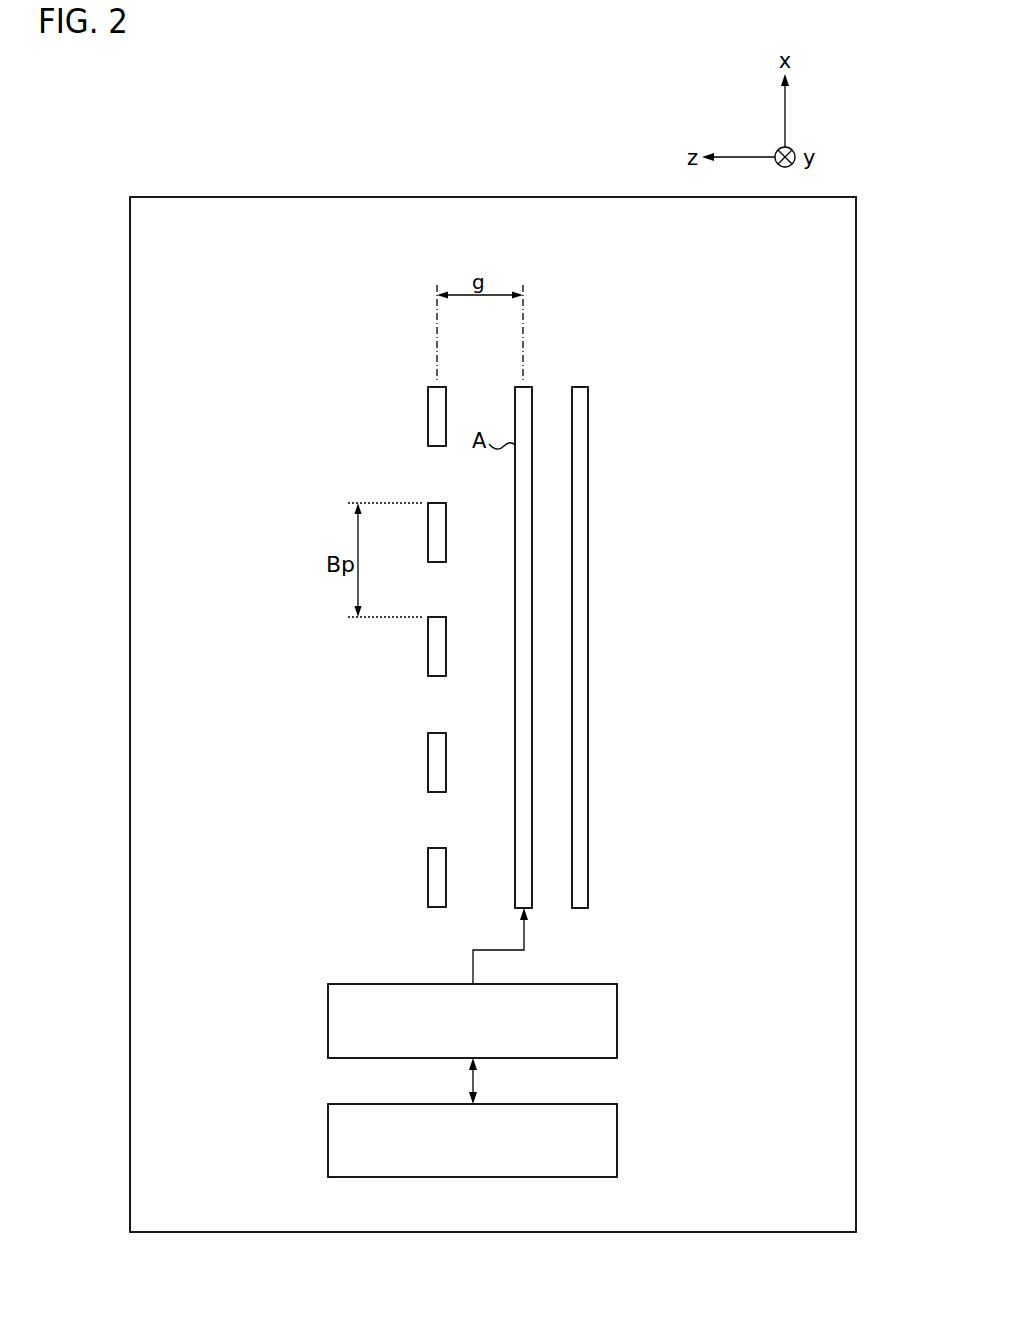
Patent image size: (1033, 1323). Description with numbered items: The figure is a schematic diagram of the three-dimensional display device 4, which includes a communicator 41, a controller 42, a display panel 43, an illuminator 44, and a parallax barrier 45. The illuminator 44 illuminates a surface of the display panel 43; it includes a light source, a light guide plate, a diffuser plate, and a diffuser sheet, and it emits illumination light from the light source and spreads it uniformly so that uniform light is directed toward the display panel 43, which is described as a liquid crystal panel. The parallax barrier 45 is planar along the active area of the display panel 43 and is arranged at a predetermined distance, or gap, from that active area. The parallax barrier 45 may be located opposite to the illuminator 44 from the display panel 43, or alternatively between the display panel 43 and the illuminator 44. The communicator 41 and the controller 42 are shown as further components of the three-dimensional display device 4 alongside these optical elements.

The 3D display device 4 is at (130, 622).
The communicator 41 is at (328, 1139).
The controller 42 is at (328, 1018).
The display panel 43 is at (531, 387).
The illuminator 44 is at (588, 387).
The parallax barrier 45 is at (428, 387).